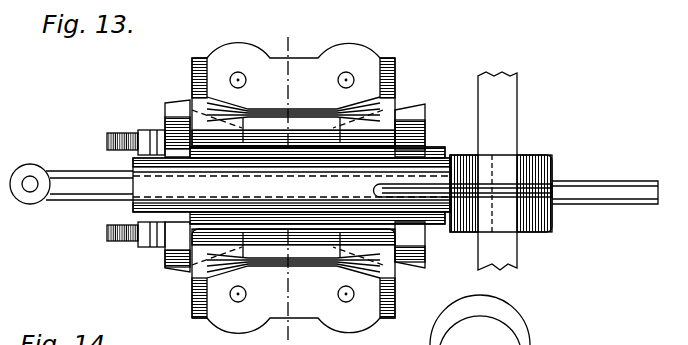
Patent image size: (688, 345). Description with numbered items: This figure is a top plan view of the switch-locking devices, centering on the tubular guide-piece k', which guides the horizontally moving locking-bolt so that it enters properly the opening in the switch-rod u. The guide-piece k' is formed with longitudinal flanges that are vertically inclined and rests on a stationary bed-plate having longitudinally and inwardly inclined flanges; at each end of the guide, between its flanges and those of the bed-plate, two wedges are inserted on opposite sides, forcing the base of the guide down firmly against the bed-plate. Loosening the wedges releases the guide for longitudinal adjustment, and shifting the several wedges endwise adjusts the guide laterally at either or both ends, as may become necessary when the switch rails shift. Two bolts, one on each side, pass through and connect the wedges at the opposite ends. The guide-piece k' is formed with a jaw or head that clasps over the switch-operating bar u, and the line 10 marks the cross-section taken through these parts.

The section line 10 is at (296, 188).
The tubular guide-piece k' is at (291, 185).
The switch-rod u is at (497, 171).